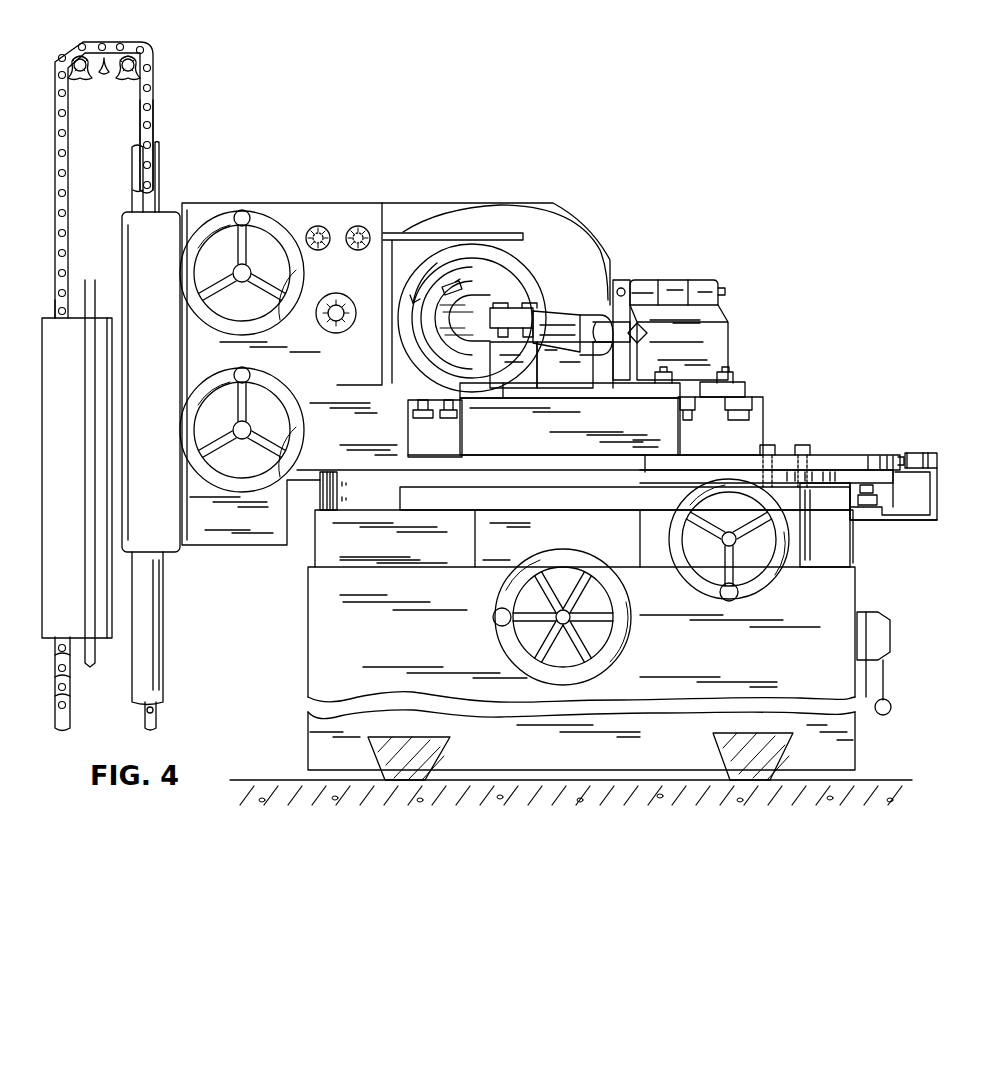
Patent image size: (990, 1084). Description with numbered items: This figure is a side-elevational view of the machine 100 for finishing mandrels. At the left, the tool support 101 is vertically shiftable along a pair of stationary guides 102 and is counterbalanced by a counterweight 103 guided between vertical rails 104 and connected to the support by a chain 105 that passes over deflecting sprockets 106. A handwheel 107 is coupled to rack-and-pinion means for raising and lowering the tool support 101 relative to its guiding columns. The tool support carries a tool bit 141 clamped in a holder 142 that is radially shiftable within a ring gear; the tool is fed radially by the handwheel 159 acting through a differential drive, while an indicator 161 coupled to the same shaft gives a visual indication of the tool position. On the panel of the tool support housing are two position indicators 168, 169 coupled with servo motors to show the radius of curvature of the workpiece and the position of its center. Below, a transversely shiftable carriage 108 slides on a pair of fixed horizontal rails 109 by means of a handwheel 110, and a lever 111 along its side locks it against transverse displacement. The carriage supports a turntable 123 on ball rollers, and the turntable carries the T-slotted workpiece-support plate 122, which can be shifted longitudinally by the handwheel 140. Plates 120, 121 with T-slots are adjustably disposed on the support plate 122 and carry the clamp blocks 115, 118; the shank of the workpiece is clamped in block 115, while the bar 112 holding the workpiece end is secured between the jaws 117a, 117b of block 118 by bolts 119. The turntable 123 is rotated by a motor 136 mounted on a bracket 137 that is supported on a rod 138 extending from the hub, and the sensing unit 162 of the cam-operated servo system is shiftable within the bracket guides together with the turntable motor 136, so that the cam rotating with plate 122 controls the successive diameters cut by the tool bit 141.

The machine 100 is at (301, 202).
The tool support 101 is at (426, 210).
The stationary guides 102 is at (158, 192).
The counterweight 103 is at (43, 522).
The vertical rails 104 is at (88, 388).
The chain 105 is at (150, 98).
The deflecting sprockets 106 is at (120, 77).
The handwheel 107 is at (303, 428).
The carriage 108 is at (850, 747).
The fixed horizontal rails 109 is at (442, 746).
The handwheel 110 is at (628, 630).
The lever 111 is at (880, 634).
The bar 112 is at (537, 392).
The clamp block 115 is at (736, 317).
The jaw 117a is at (548, 314).
The jaw 117b is at (520, 395).
The clamp block 118 is at (543, 382).
The bolts 119 is at (500, 305).
The plate 120 is at (748, 407).
The plate 121 is at (672, 434).
The workpiece-support plate 122 is at (737, 460).
The turntable 123 is at (360, 477).
The motor 136 is at (877, 500).
The bracket 137 is at (937, 502).
The rod 138 is at (877, 518).
The handwheel 140 is at (771, 584).
The tool bit 141 is at (462, 292).
The holder 142 is at (447, 288).
The handwheel 159 is at (276, 322).
The indicator 161 is at (333, 296).
The sensing unit 162 is at (927, 457).
The position indicator 168 is at (314, 228).
The position indicator 169 is at (358, 228).